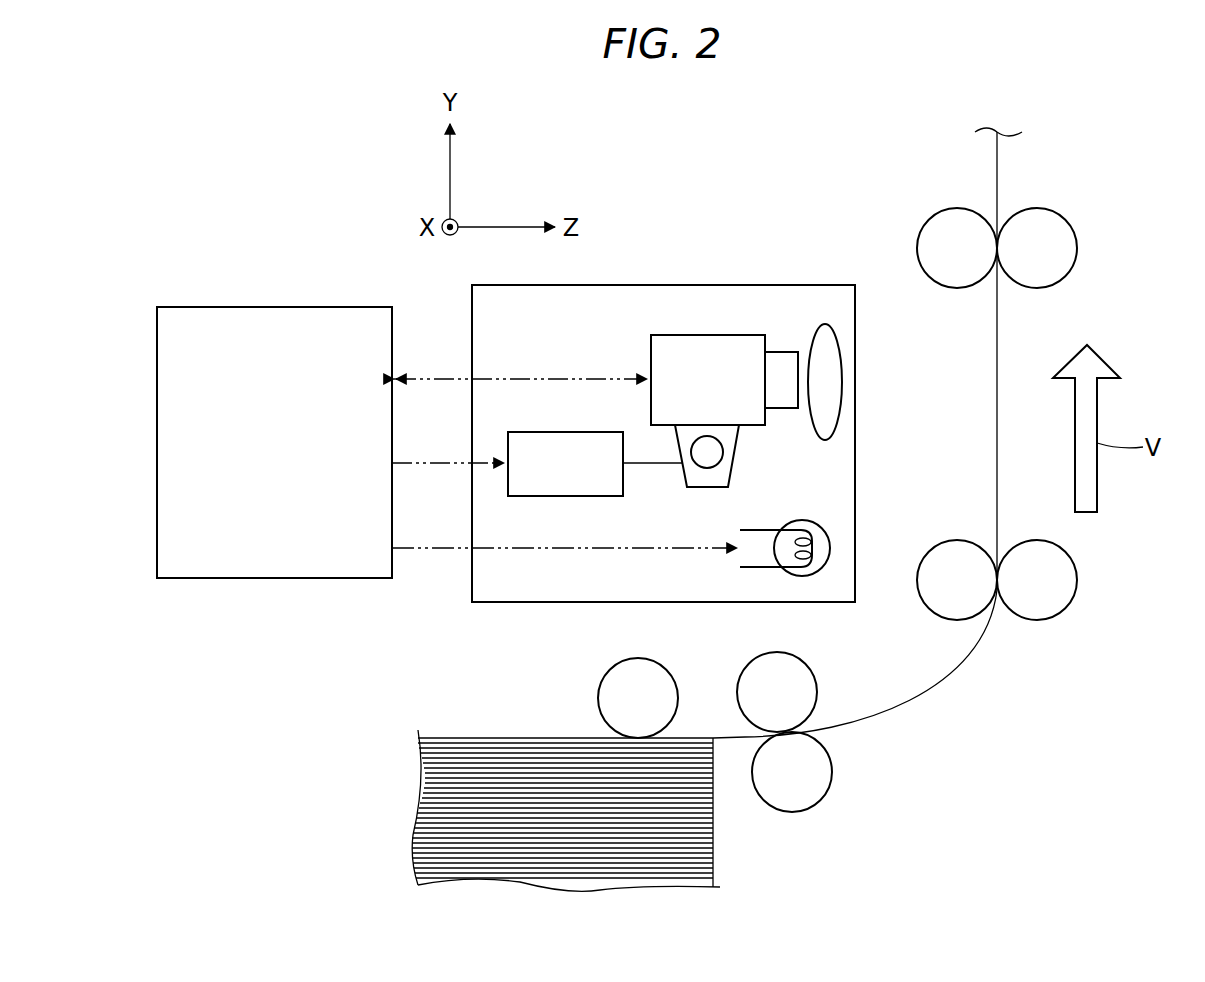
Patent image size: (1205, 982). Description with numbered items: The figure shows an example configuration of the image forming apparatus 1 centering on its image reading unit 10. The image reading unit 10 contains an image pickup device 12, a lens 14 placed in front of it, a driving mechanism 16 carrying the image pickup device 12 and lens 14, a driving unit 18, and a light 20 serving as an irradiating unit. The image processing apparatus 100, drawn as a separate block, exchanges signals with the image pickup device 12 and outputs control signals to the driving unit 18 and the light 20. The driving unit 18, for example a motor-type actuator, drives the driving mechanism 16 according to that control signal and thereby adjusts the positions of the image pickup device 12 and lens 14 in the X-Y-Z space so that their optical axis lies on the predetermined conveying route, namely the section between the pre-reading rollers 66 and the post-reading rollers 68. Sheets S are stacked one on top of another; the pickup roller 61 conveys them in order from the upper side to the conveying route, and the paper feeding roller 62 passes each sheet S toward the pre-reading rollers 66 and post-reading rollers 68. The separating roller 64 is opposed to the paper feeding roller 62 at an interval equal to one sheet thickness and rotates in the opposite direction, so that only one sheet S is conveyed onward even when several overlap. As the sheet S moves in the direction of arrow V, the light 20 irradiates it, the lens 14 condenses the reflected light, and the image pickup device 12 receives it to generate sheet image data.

The image forming apparatus 1 is at (272, 130).
The image processing apparatus 100 is at (272, 307).
The image reading unit 10 is at (662, 285).
The image pickup device 12 is at (708, 335).
The lens 14 is at (818, 330).
The driving mechanism 16 is at (742, 458).
The driving unit 18 is at (565, 432).
The light 20 is at (770, 527).
The pickup roller 61 is at (622, 660).
The paper feeding roller 62 is at (760, 656).
The separating roller 64 is at (790, 812).
The pre-reading rollers 66 is at (1020, 540).
The post-reading rollers 68 is at (1020, 210).
The sheet S is at (410, 730).